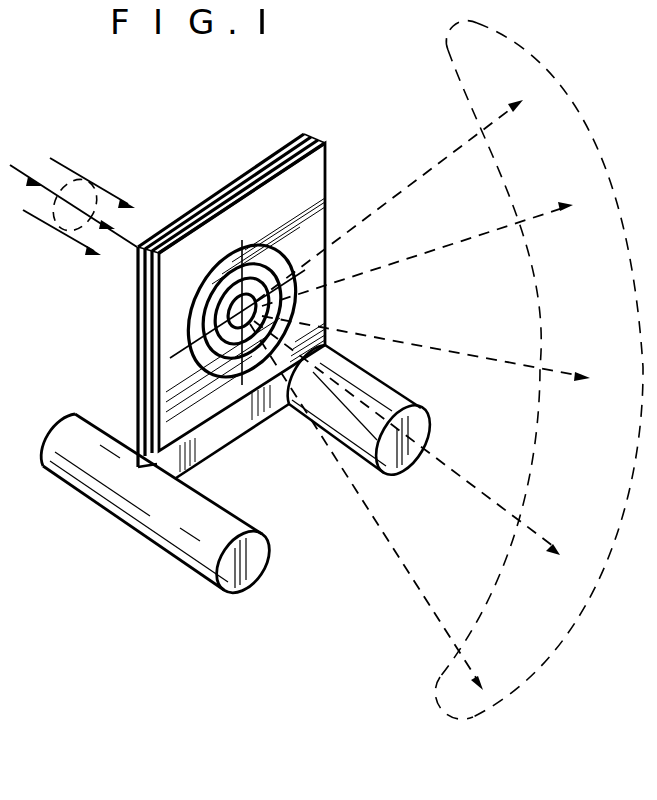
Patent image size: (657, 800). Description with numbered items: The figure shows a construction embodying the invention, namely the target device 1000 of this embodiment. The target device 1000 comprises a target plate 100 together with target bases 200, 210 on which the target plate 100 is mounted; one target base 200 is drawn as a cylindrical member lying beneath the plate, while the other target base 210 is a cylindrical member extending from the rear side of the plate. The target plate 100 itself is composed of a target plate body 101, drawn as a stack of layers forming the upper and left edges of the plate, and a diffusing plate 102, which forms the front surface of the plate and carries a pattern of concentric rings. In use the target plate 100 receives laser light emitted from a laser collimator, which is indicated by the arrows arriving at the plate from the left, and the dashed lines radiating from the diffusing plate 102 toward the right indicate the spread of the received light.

The target plate 100 is at (338, 162).
The target plate body 101 is at (210, 197).
The diffusing plate 102 is at (307, 242).
The target base 200 is at (158, 522).
The target base 210 is at (407, 405).
The target device 1000 is at (300, 612).